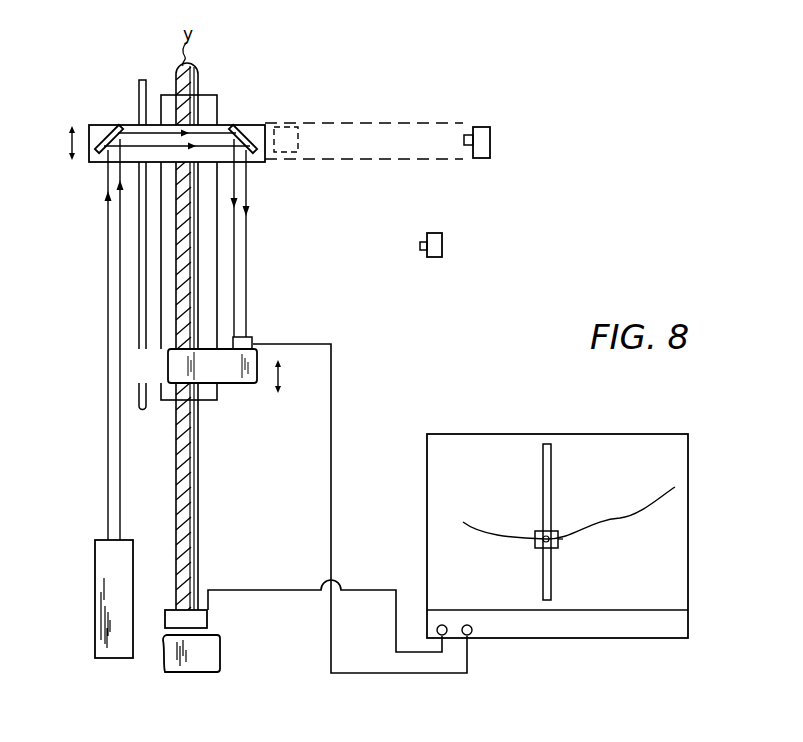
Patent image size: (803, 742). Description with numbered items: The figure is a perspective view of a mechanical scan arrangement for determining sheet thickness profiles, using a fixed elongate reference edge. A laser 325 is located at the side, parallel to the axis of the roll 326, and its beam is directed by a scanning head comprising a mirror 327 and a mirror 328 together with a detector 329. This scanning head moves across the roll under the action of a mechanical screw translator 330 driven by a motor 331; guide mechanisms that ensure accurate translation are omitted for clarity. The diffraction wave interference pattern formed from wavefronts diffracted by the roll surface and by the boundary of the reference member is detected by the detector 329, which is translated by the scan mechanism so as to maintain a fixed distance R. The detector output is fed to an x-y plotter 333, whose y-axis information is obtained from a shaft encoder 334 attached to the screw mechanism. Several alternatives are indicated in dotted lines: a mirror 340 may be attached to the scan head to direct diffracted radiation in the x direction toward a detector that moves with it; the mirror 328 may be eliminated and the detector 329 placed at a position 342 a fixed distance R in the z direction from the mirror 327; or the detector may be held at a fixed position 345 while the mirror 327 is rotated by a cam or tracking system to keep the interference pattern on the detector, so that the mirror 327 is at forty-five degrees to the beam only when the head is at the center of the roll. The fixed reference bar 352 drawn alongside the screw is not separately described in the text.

The laser 325 is at (95, 569).
The roll 326 is at (207, 401).
The mirror 327 is at (113, 127).
The mirror 328 is at (248, 128).
The detector 329 is at (252, 342).
The mechanical screw translator 330 is at (183, 512).
The motor 331 is at (220, 658).
The x-y plotter 333 is at (688, 640).
The shaft encoder 334 is at (208, 617).
The mirror 340 is at (283, 128).
The position 342 is at (472, 127).
The position 345 is at (428, 258).
The reference bar 352 is at (139, 82).